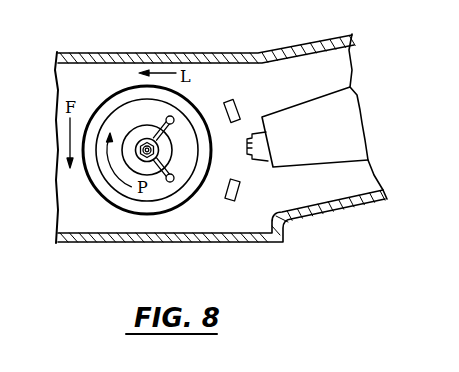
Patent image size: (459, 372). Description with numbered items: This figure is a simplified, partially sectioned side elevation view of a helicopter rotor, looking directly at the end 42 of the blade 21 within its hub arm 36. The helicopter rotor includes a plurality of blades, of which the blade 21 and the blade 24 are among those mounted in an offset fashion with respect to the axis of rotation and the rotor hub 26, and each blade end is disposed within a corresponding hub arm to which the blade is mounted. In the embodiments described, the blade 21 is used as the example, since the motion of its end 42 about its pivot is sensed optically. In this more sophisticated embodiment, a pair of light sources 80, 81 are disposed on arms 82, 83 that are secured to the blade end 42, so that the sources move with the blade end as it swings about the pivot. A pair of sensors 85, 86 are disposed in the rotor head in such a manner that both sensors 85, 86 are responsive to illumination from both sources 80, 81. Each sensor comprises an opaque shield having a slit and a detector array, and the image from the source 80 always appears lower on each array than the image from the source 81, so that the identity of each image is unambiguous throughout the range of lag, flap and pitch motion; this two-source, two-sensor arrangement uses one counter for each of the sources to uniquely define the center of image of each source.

The blade 21 is at (128, 188).
The blade 24 is at (355, 109).
The rotor hub 26 is at (218, 73).
The hub arm 36 is at (112, 93).
The blade end 42 is at (142, 137).
The light source 80 is at (174, 118).
The light source 81 is at (176, 182).
The arm 82 is at (162, 127).
The arm 83 is at (168, 162).
The sensor 85 is at (235, 102).
The sensor 86 is at (237, 194).